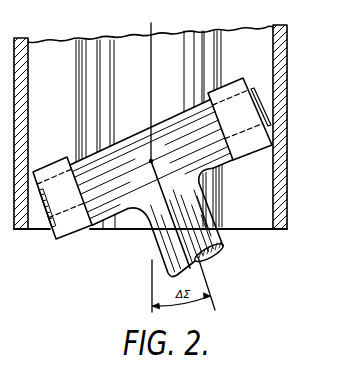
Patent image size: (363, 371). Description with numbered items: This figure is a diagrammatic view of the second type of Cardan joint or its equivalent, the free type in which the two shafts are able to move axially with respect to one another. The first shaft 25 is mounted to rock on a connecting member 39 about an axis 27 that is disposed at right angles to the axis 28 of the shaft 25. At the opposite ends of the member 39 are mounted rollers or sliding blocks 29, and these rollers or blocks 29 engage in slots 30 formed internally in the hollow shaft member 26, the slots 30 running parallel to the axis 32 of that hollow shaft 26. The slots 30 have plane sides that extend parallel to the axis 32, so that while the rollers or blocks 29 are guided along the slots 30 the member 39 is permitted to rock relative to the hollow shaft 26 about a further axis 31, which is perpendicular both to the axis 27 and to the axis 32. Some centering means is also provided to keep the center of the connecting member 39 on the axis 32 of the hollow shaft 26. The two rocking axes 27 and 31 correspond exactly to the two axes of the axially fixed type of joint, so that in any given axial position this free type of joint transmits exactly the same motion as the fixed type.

The shaft 25 is at (223, 247).
The hollow shaft member 26 is at (288, 50).
The axis 27 is at (241, 113).
The axis of shaft 28 is at (205, 276).
The rollers or sliding blocks 29 is at (66, 240).
The slots 30 is at (47, 57).
The axis 31 is at (152, 160).
The axis of shaft 32 is at (152, 27).
The member 39 is at (269, 121).